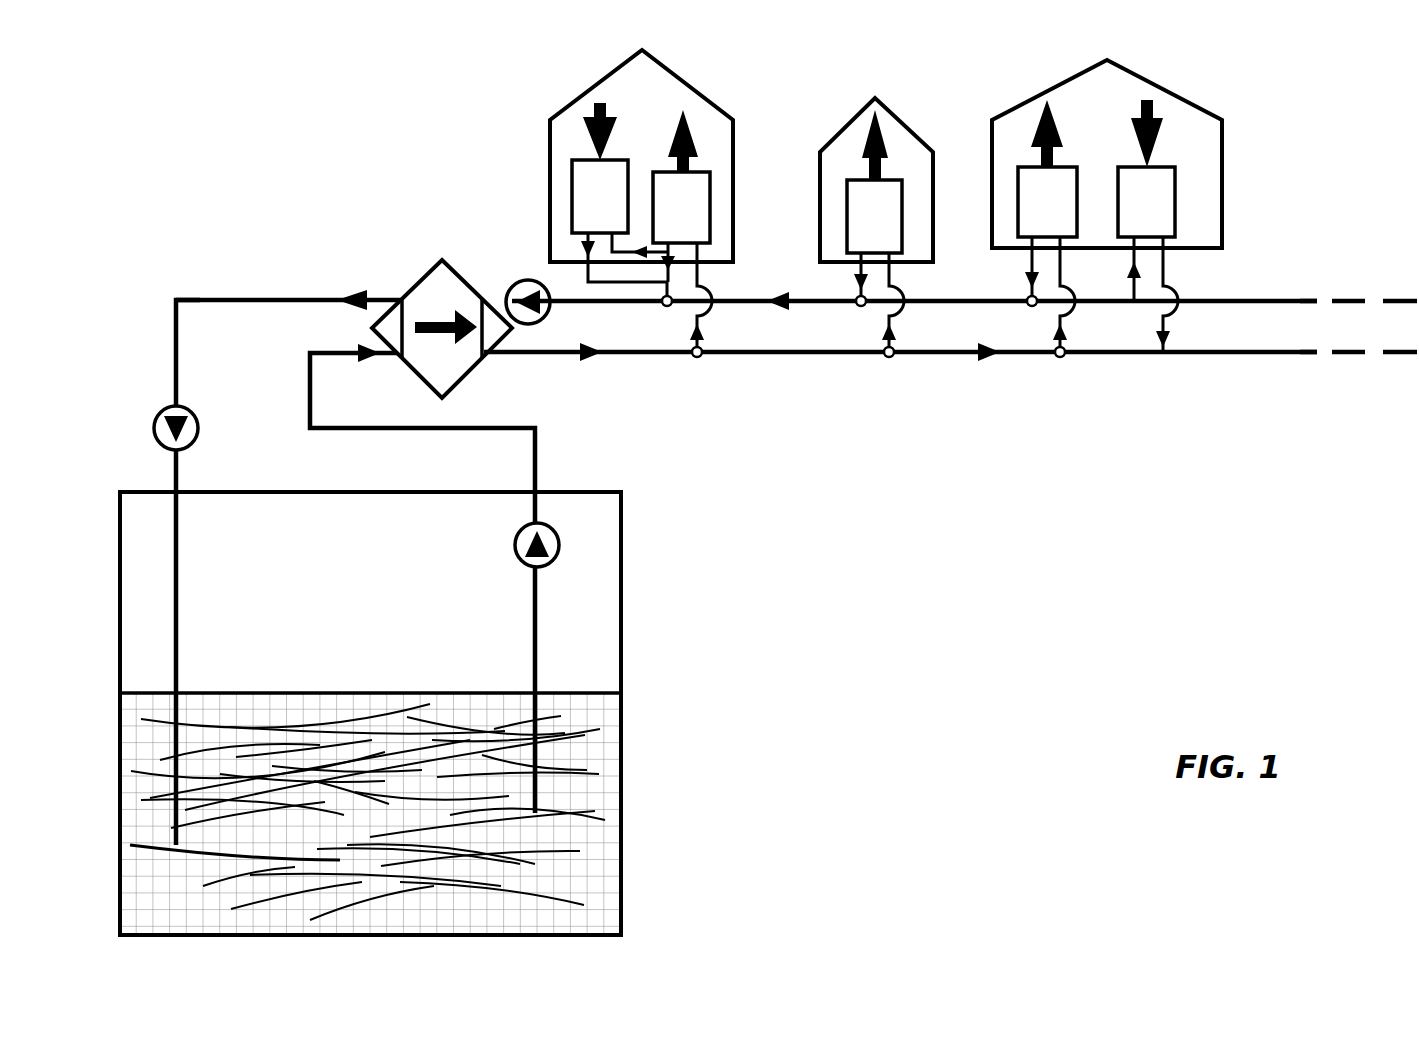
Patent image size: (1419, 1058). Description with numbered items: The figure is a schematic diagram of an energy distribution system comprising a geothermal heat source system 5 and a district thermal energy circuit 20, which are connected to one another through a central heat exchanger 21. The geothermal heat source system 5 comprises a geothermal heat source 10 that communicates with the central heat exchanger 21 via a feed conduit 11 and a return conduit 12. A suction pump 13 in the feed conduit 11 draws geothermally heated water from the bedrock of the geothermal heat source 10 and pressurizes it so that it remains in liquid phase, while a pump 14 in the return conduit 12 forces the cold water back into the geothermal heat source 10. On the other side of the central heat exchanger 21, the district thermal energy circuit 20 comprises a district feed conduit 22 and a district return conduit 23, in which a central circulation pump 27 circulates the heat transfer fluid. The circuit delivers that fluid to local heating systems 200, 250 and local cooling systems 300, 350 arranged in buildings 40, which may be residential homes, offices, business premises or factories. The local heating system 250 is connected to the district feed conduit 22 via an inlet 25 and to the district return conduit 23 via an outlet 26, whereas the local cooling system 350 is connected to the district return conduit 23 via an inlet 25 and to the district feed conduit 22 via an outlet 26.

The geothermal heat source system 5 is at (194, 272).
The geothermal heat source 10 is at (329, 714).
The feed conduit 11 is at (309, 372).
The return conduit 12 is at (233, 298).
The suction pump 13 is at (516, 542).
The pump 14 is at (190, 404).
The district thermal energy circuit 20 is at (902, 406).
The central heat exchanger 21 is at (420, 298).
The district feed conduit 22 is at (647, 355).
The district return conduit 23 is at (813, 303).
The inlet 25 is at (700, 272).
The outlet 26 is at (660, 292).
The central circulation pump 27 is at (518, 283).
The building 40 is at (665, 82).
The local heating system 200 is at (716, 156).
The local heating system 250 is at (1081, 145).
The local cooling system 300 is at (580, 138).
The local cooling system 350 is at (1172, 146).